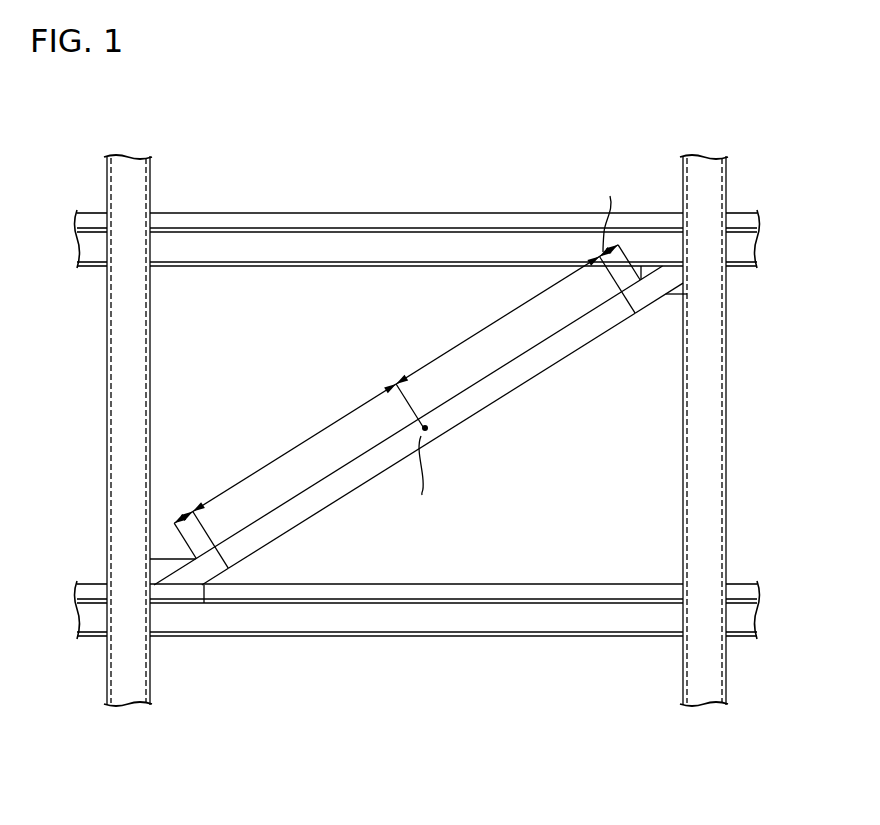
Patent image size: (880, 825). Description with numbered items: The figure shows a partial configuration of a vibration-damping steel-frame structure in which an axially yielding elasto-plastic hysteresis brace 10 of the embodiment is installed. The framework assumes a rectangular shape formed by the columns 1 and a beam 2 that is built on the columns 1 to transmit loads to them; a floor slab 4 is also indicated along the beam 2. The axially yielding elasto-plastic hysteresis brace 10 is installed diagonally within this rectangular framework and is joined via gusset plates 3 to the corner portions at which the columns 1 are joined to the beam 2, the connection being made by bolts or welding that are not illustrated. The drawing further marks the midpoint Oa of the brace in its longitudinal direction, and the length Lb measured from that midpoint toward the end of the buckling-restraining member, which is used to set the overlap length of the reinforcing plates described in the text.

The column 1 is at (107, 423).
The beam 2 is at (360, 243).
The gusset plate 3 is at (171, 559).
The floor slab 4 is at (499, 213).
The axially yielding elasto-plastic hysteresis brace 10 is at (463, 436).